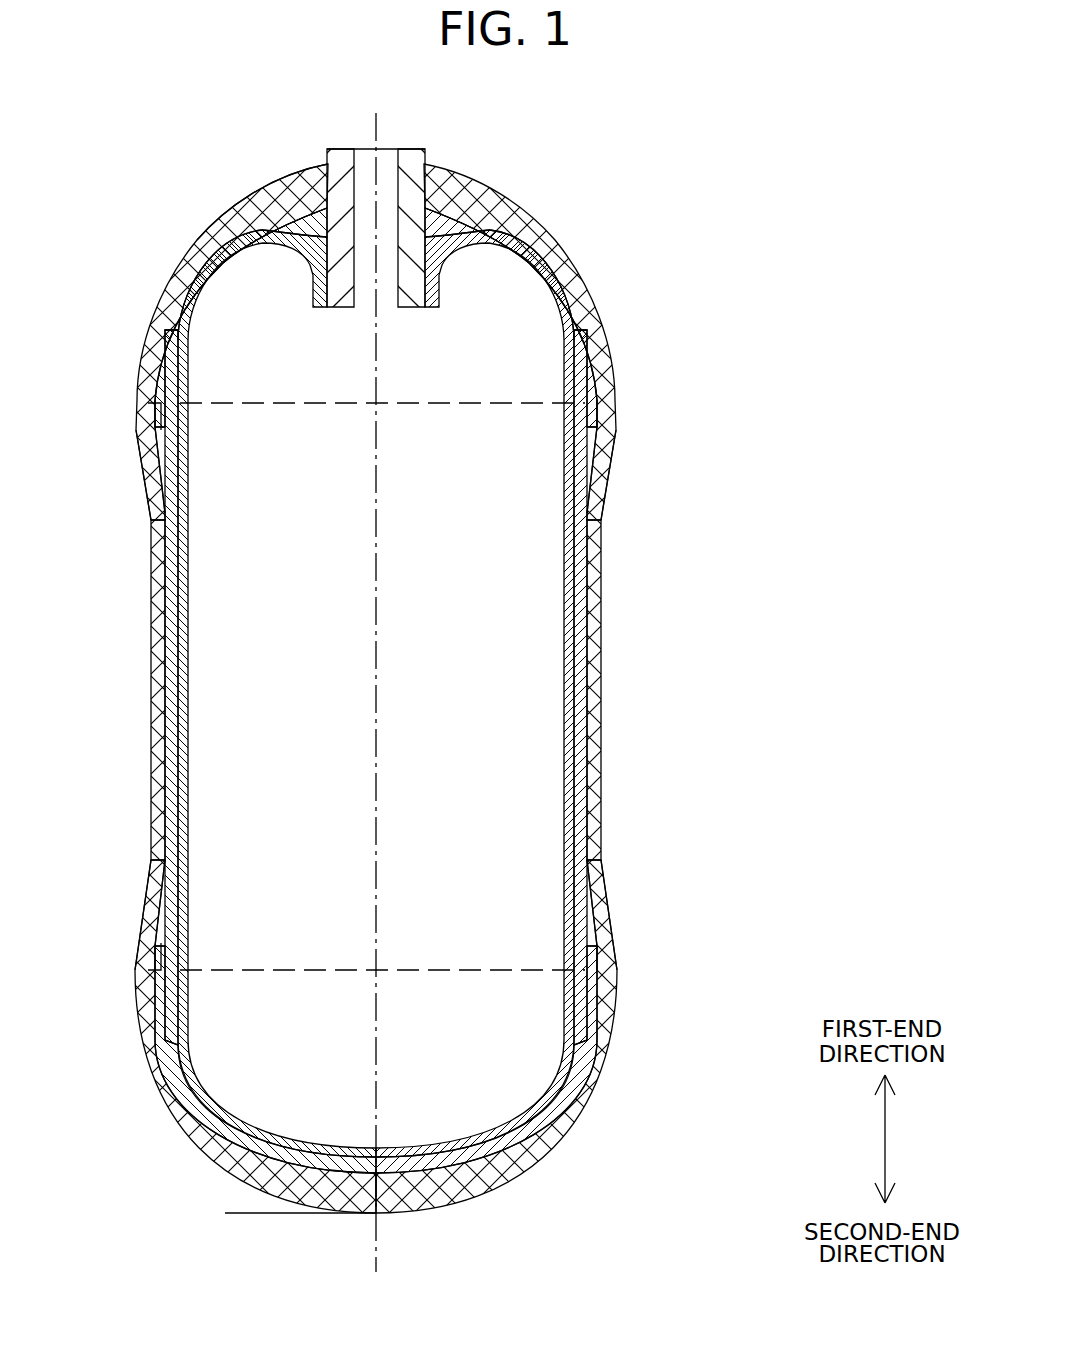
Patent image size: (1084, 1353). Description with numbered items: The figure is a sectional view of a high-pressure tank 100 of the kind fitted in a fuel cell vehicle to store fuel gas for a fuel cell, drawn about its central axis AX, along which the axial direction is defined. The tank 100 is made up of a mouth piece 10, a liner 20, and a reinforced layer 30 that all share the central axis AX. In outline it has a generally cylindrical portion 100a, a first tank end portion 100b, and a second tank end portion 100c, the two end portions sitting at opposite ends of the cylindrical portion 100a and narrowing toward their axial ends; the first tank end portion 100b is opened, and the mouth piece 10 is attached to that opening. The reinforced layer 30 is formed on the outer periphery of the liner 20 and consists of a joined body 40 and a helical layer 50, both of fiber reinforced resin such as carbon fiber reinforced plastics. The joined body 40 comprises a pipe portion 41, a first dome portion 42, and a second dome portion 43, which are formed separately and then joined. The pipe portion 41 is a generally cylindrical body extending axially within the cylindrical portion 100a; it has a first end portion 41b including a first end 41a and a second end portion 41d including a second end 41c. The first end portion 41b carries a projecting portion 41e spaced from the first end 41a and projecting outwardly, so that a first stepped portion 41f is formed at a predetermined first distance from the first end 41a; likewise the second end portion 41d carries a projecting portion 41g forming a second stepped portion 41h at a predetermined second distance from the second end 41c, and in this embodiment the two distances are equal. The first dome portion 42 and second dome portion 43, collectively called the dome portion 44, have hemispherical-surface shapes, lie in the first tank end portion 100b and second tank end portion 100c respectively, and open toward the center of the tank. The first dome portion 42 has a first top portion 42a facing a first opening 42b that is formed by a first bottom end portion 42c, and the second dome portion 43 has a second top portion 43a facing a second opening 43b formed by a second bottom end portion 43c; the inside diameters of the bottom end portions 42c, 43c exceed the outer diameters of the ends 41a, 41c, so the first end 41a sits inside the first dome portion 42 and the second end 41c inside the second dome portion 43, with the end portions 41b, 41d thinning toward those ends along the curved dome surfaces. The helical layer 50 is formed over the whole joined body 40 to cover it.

The central axis AX is at (377, 128).
The high-pressure tank 100 is at (614, 177).
The cylindrical portion 100a is at (642, 693).
The first tank end portion 100b is at (630, 290).
The second tank end portion 100c is at (632, 1120).
The mouth piece 10 is at (418, 160).
The liner 20 is at (570, 820).
The reinforced layer 30 is at (735, 525).
The joined body 40 is at (609, 526).
The pipe portion 41 is at (583, 728).
The first end 41a is at (576, 334).
The first end portion 41b is at (666, 372).
The second end 41c is at (573, 1040).
The second end portion 41d is at (666, 1005).
The projecting portion 41e is at (598, 425).
The first stepped portion 41f is at (596, 412).
The projecting portion 41g is at (598, 955).
The second stepped portion 41h is at (604, 980).
The first dome portion 42 is at (560, 272).
The first top portion 42a is at (294, 205).
The first opening 42b is at (226, 408).
The first bottom end portion 42c is at (152, 408).
The second dome portion 43 is at (553, 1102).
The second top portion 43a is at (350, 1178).
The second opening 43b is at (226, 968).
The second bottom end portion 43c is at (150, 965).
The dome portion 44 is at (427, 688).
The helical layer 50 is at (592, 567).